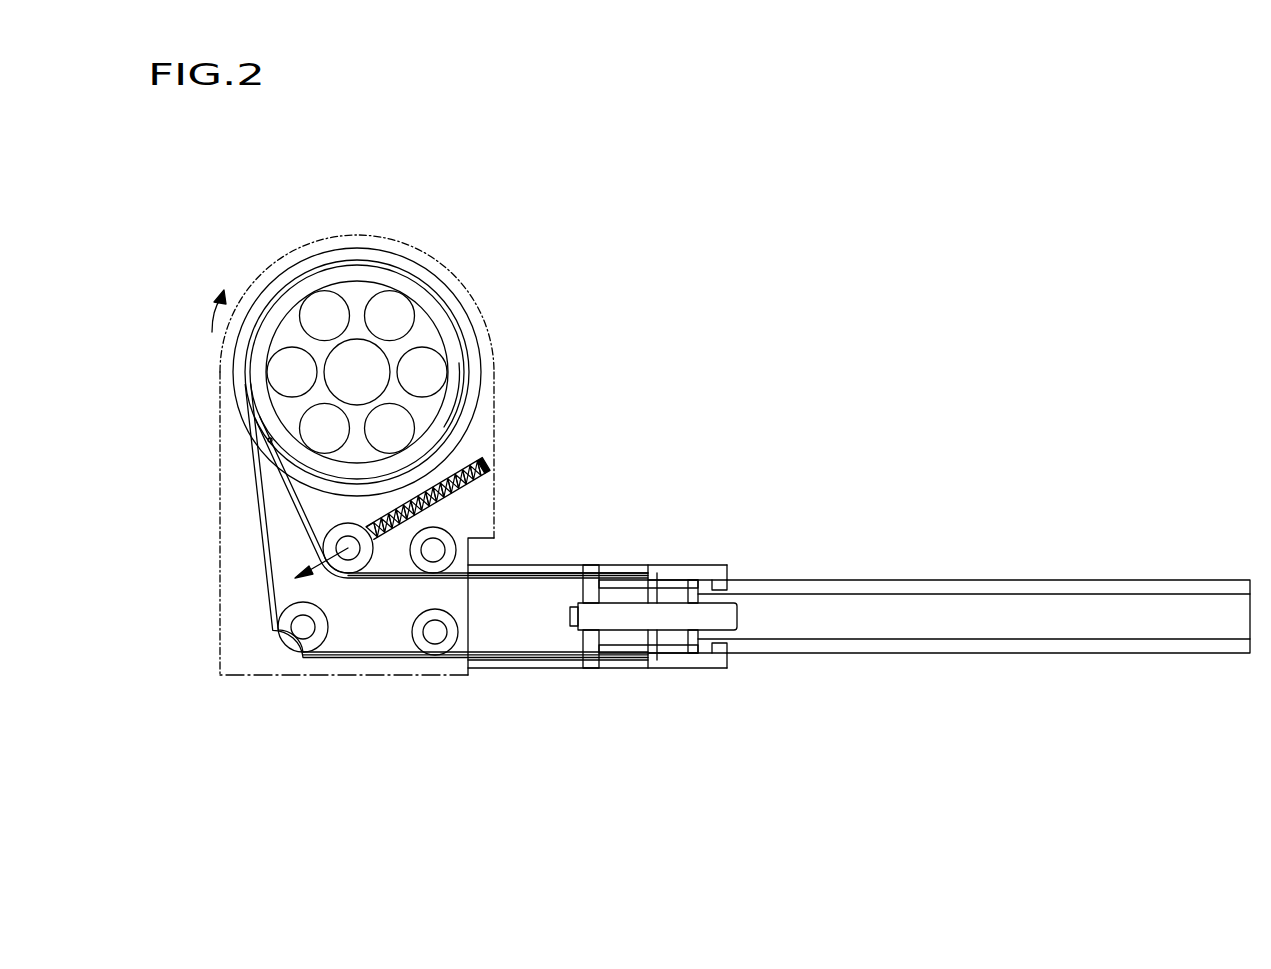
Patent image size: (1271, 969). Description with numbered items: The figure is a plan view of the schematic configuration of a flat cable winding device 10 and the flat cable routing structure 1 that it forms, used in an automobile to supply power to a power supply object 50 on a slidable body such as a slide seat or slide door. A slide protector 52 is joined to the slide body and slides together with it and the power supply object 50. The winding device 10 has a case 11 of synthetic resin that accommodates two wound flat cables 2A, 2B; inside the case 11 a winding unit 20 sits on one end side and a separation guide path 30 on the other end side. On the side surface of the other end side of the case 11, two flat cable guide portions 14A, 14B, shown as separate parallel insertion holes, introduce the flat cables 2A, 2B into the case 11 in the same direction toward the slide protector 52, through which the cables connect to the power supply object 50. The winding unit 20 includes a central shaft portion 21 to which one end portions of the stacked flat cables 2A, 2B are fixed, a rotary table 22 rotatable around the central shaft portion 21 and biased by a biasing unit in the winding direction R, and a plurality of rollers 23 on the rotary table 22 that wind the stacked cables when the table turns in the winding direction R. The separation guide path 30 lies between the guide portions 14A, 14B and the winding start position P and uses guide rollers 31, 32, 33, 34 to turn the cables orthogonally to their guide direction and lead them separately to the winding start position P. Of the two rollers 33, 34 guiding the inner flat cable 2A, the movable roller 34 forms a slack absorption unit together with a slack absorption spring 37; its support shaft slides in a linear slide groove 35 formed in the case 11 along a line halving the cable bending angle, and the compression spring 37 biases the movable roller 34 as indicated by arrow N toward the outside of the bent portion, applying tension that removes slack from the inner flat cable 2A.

The flat cable routing structure 1 is at (712, 304).
The flat cable 2A is at (291, 510).
The flat cable 2B is at (260, 520).
The flat cable winding device 10 is at (414, 226).
The case 11 is at (470, 288).
The flat cable guide portion 14A is at (538, 564).
The flat cable guide portion 14B is at (533, 670).
The winding unit 20 is at (334, 256).
The central shaft portion 21 is at (338, 378).
The rotary table 22 is at (291, 327).
The rollers 23 is at (315, 305).
The separation guide path 30 is at (273, 656).
The guide roller 31 is at (427, 655).
The guide roller 32 is at (300, 652).
The guide roller 33 is at (450, 532).
The movable roller 34 is at (320, 533).
The slide groove 35 is at (466, 459).
The slack absorption spring 37 is at (484, 468).
The power supply object 50 is at (945, 598).
The slide protector 52 is at (673, 568).
The winding start position P is at (276, 455).
The winding direction R is at (210, 311).
The arrow N is at (350, 560).